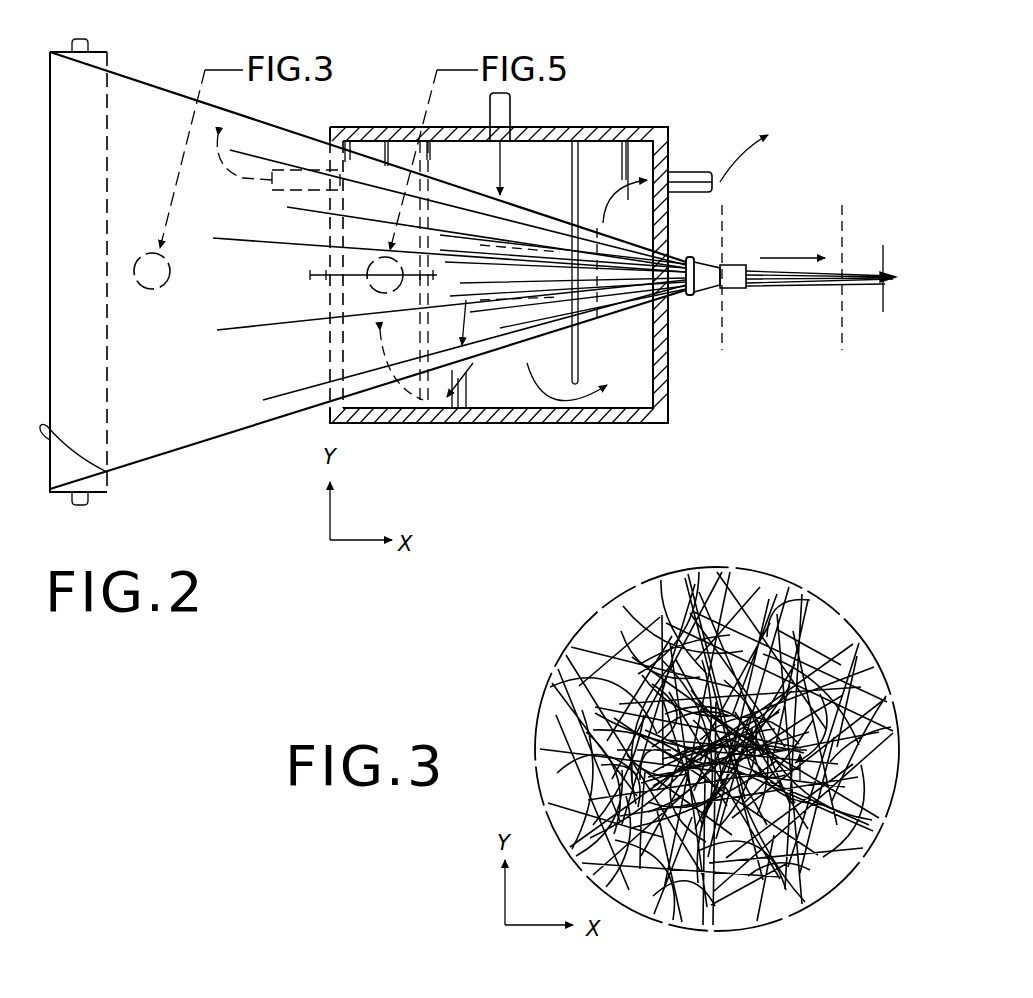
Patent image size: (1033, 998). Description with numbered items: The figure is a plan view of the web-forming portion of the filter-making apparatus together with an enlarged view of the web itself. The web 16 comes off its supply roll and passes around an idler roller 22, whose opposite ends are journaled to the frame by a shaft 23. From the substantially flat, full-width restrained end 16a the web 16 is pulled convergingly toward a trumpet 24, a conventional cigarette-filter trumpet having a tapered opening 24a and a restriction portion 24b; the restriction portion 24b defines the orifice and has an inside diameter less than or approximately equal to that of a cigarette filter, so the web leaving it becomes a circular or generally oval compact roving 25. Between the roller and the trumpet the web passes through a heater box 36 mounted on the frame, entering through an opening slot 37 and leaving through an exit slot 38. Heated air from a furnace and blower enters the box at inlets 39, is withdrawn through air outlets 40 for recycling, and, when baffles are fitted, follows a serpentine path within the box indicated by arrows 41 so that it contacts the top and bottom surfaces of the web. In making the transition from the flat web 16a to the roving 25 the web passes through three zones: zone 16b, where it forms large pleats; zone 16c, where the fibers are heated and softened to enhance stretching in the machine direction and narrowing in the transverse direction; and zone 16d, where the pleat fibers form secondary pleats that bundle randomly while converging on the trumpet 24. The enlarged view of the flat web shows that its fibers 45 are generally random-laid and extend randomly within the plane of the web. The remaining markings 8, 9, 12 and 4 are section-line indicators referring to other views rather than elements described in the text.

In FIG. 2, the idler roller 22 is at (108, 52).
In FIG. 2, the shaft 23 is at (88, 40).
In FIG. 2, the web 16 is at (502, 358).
In FIG. 2, the flat restrained end of web 16a is at (110, 473).
In FIG. 2, the zone of large pleats 16b is at (193, 285).
In FIG. 3, the zone of large pleats 16b is at (552, 678).
In FIG. 2, the heating zone 16c is at (463, 195).
In FIG. 2, the secondary pleat zone 16d is at (613, 310).
In FIG. 2, the trumpet 24 is at (700, 295).
In FIG. 2, the tapered opening 24a is at (697, 268).
In FIG. 2, the restriction portion 24b is at (740, 270).
In FIG. 2, the roving 25 is at (813, 290).
In FIG. 2, the heater box 36 is at (628, 128).
In FIG. 2, the opening slot 37 is at (340, 172).
In FIG. 2, the exit slot 38 is at (670, 186).
In FIG. 2, the air inlet 39 is at (512, 110).
In FIG. 2, the air outlet 40 is at (698, 180).
In FIG. 2, the air flow arrows 41 is at (497, 165).
In FIG. 2, the section line 8 is at (595, 240).
In FIG. 2, the section line 9 is at (722, 207).
In FIG. 2, the section line 12 is at (842, 207).
In FIG. 3, the fibers 45 is at (613, 612).
In FIG. 3, the section line 4 is at (715, 785).